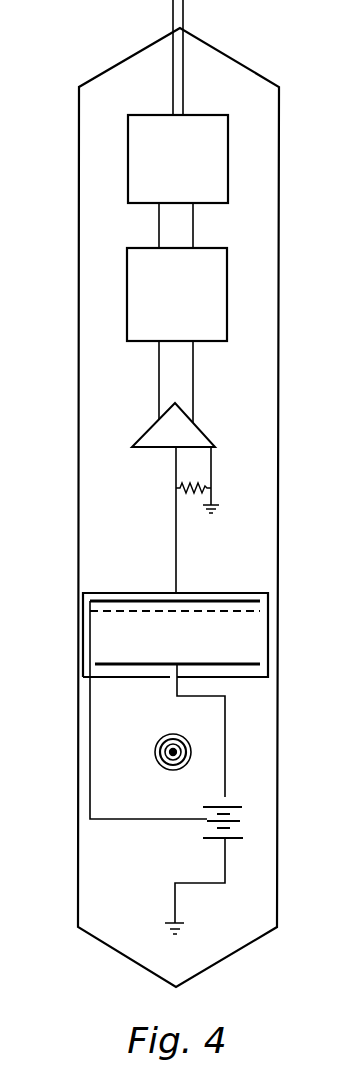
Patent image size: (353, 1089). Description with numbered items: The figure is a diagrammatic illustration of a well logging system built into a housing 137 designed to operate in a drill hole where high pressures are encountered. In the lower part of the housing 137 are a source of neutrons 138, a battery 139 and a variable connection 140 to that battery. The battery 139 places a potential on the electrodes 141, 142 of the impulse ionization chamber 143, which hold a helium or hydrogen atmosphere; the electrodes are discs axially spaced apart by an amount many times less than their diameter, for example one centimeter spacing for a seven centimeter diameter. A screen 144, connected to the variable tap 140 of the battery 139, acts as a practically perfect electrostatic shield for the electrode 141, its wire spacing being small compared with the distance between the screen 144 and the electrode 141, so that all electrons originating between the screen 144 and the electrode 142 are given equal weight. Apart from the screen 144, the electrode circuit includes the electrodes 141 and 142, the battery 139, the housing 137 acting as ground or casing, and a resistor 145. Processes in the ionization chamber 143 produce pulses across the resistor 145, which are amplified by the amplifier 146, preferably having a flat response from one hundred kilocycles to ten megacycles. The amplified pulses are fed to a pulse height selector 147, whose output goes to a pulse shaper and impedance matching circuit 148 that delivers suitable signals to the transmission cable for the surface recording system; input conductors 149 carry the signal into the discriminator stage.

The housing 137 is at (78, 402).
The source of neutrons 138 is at (157, 751).
The battery 139 is at (240, 827).
The variable connection 140 is at (206, 819).
The electrode 141 is at (255, 600).
The electrode 142 is at (252, 668).
The impulse ionization chamber 143 is at (196, 592).
The screen 144 is at (253, 613).
The resistor 145 is at (186, 491).
The amplifier 146 is at (215, 447).
The pulse height selector 147 is at (228, 283).
The pulse shaper and impedance matching circuit 148 is at (228, 146).
The input conductors 149 is at (263, 164).